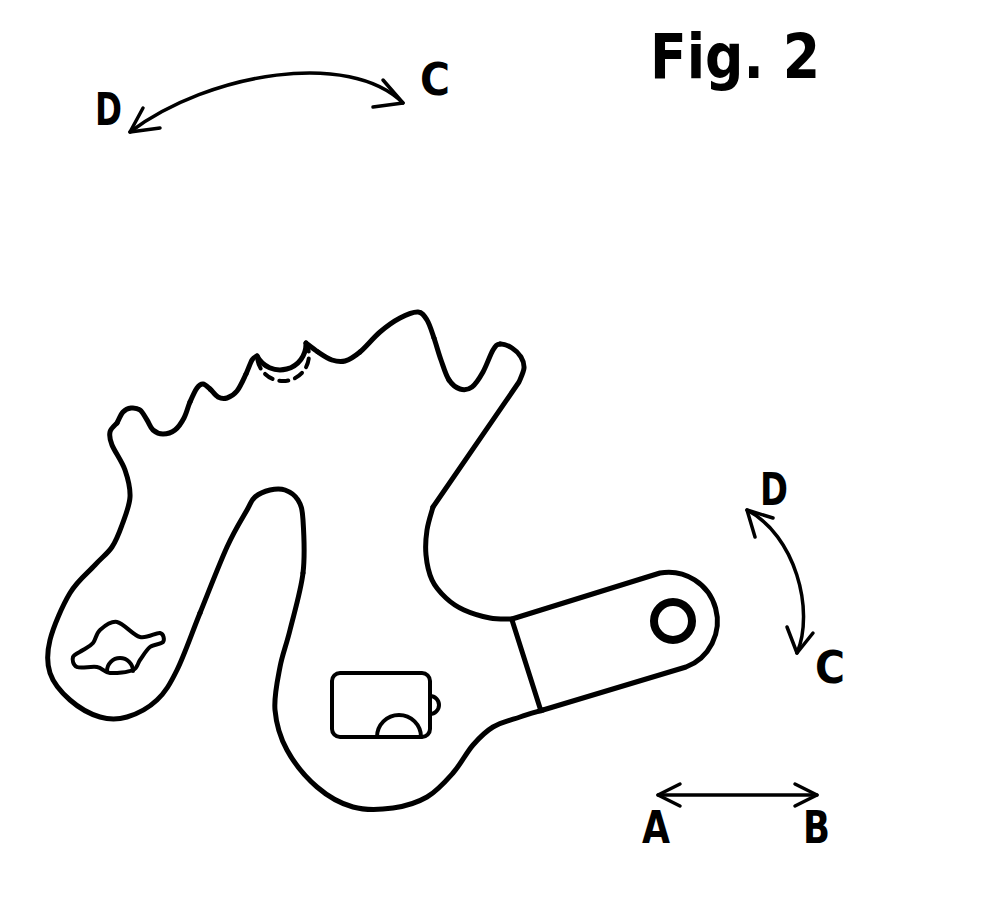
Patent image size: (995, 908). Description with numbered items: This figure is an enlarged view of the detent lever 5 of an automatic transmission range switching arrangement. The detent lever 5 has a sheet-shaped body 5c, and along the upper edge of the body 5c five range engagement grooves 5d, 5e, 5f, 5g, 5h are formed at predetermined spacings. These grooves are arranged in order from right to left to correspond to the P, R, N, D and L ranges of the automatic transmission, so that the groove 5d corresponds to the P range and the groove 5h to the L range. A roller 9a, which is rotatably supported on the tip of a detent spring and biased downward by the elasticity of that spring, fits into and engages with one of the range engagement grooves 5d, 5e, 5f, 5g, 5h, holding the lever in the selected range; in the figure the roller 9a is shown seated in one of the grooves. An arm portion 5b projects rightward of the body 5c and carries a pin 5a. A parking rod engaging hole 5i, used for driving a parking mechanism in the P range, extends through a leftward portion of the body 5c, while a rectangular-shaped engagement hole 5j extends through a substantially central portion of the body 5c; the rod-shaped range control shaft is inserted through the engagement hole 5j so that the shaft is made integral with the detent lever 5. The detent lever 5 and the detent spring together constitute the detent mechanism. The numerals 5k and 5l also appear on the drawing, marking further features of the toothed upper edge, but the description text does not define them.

The detent lever 5 is at (552, 421).
The pin 5a is at (675, 597).
The arm portion 5b is at (609, 688).
The body 5c is at (298, 772).
The range engagement groove 5d is at (455, 385).
The range engagement groove 5e is at (347, 357).
The range engagement groove 5f is at (280, 372).
The range engagement groove 5g is at (221, 395).
The range engagement groove 5h is at (163, 430).
The parking rod engaging hole 5i is at (136, 668).
The engagement hole 5j is at (412, 736).
The teeth 5k is at (200, 385).
The tooth flank 5l is at (310, 340).
The roller 9a is at (272, 314).